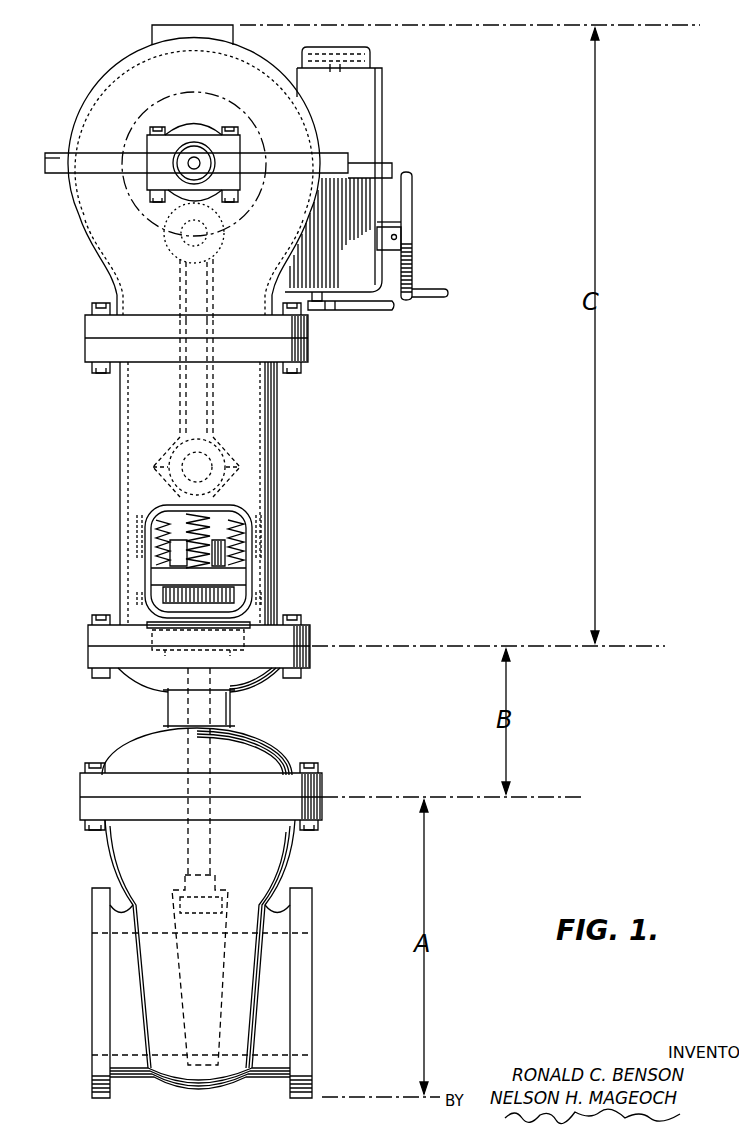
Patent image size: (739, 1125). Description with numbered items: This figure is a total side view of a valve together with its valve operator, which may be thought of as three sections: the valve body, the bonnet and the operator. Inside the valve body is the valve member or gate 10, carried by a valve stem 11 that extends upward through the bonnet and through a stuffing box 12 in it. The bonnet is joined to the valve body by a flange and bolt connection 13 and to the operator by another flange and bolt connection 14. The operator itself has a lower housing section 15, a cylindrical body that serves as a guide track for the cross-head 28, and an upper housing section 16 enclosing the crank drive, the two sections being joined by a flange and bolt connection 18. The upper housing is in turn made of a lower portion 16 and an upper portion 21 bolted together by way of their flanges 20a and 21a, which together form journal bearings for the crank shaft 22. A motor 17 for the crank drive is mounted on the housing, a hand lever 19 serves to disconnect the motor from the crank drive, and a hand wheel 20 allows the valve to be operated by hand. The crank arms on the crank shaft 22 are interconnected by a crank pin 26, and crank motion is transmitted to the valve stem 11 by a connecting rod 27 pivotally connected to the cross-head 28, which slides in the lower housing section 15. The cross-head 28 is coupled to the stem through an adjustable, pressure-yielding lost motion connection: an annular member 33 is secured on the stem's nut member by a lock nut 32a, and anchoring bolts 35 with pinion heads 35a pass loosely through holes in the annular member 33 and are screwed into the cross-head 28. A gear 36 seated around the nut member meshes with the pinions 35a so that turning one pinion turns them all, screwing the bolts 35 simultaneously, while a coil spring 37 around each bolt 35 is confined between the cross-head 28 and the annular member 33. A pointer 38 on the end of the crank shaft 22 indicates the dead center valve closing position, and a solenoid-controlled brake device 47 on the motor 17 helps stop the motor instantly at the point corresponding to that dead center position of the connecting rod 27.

The valve member or valve disc or gate 10 is at (184, 1004).
The valve stem 11 is at (188, 850).
The stuffing box 12 is at (172, 640).
The flange and bolt connection 13 is at (80, 806).
The flange and bolt connection 14 is at (88, 662).
The lower housing section 15 is at (280, 478).
The upper housing section 16 is at (92, 246).
The motor 17 is at (383, 108).
The flange and bolt connection 18 is at (85, 358).
The hand lever 19 is at (366, 312).
The hand wheel 20 is at (412, 250).
The flange 20a is at (55, 172).
The upper half or portion 21 is at (84, 103).
The flange 21a is at (55, 153).
The crank shaft 22 is at (193, 195).
The crank pin 26 is at (186, 243).
The connecting rod 27 is at (180, 406).
The cross-head 28 is at (152, 471).
The lock nut 32a is at (174, 540).
The annular member 33 is at (166, 577).
The anchoring bolts 35 is at (205, 522).
The pinions 35a is at (142, 604).
The gear 36 is at (187, 586).
The coil spring 37 is at (158, 531).
The pointer 38 is at (194, 163).
The solenoid-controlled brake device 47 is at (371, 52).